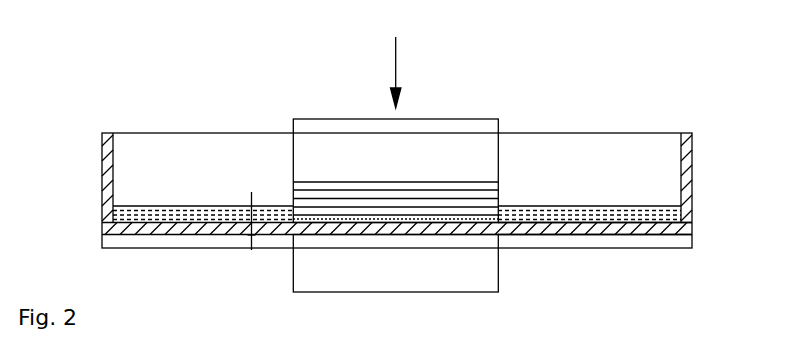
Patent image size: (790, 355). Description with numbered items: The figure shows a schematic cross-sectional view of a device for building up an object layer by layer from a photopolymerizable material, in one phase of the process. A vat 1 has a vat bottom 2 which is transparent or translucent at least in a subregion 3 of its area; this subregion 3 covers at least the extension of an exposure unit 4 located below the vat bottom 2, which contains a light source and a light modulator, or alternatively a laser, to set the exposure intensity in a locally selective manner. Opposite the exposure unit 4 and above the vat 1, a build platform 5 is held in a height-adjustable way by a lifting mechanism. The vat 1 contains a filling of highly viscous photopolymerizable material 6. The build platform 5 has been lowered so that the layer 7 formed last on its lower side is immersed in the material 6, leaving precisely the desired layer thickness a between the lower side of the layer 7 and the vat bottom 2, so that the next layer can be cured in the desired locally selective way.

The vat 1 is at (697, 154).
The vat bottom 2 is at (168, 233).
The subregion 3 is at (508, 234).
The exposure unit 4 is at (302, 280).
The build platform 5 is at (499, 120).
The photopolymerizable material 6 is at (131, 217).
The layer 7 is at (285, 208).
The layer thickness a is at (245, 215).